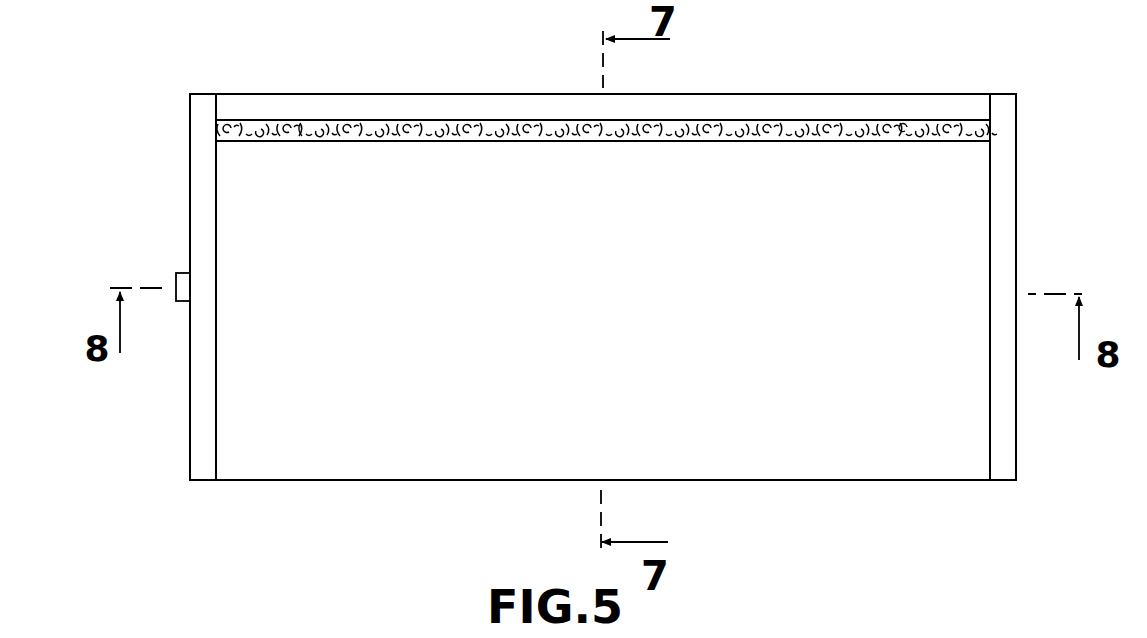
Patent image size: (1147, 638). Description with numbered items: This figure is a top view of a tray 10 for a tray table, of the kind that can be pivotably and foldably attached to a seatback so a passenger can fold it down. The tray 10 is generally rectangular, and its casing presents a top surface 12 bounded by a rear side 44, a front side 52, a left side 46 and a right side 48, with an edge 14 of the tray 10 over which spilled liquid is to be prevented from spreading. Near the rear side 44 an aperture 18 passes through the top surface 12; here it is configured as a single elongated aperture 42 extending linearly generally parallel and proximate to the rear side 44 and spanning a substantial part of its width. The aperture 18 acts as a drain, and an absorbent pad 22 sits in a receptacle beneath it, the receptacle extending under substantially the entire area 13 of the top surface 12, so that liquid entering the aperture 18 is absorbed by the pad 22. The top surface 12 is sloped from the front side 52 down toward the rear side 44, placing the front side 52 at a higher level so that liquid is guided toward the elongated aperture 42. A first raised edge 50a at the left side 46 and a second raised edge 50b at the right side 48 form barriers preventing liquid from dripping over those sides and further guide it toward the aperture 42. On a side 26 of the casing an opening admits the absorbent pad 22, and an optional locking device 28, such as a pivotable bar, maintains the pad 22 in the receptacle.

The tray 10 is at (1050, 105).
The top surface 12 is at (741, 313).
The entire area of the top surface 13 is at (226, 172).
The edge of the tray 14 is at (1008, 210).
The aperture 18 is at (770, 122).
The absorbent pad 22 is at (903, 128).
The side of the casing 26 is at (193, 452).
The locking device 28 is at (185, 281).
The elongated aperture 42 is at (310, 125).
The rear side 44 is at (422, 93).
The left side 46 is at (190, 372).
The right side 48 is at (1016, 413).
The first raised edge 50a is at (203, 380).
The second raised edge 50b is at (999, 337).
The front side 52 is at (733, 482).